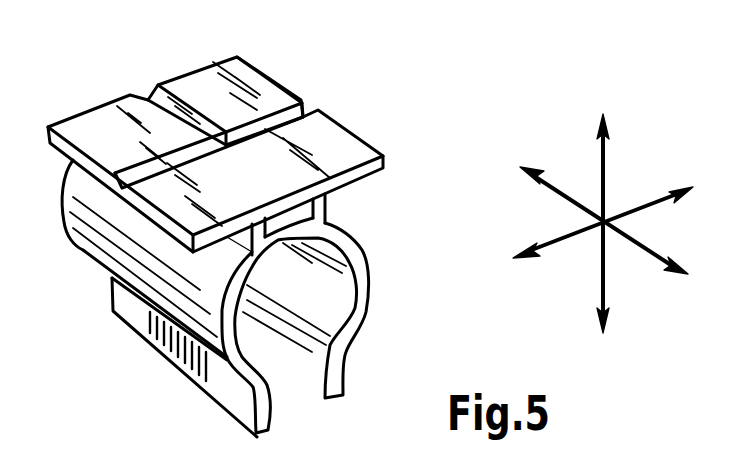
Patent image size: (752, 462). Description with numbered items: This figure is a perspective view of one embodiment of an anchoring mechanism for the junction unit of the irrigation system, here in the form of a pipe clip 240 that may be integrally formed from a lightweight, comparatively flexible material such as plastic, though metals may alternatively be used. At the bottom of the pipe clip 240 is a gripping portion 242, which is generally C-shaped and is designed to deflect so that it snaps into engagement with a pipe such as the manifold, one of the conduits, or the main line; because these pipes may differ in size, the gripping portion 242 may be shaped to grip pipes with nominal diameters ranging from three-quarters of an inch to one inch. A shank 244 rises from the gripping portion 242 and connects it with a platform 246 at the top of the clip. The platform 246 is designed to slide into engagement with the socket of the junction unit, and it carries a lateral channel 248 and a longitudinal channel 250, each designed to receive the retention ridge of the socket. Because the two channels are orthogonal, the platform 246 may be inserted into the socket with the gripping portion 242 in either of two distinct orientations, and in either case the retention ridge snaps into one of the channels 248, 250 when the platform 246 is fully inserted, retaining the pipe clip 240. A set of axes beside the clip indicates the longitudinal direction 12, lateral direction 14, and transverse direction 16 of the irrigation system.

The pipe clip 240 is at (238, 225).
The gripping portion 242 is at (363, 270).
The shank 244 is at (328, 212).
The platform 246 is at (357, 128).
The lateral channel 248 is at (190, 103).
The longitudinal channel 250 is at (132, 162).
The longitudinal direction 12 is at (640, 200).
The lateral direction 14 is at (650, 247).
The transverse direction 16 is at (607, 165).